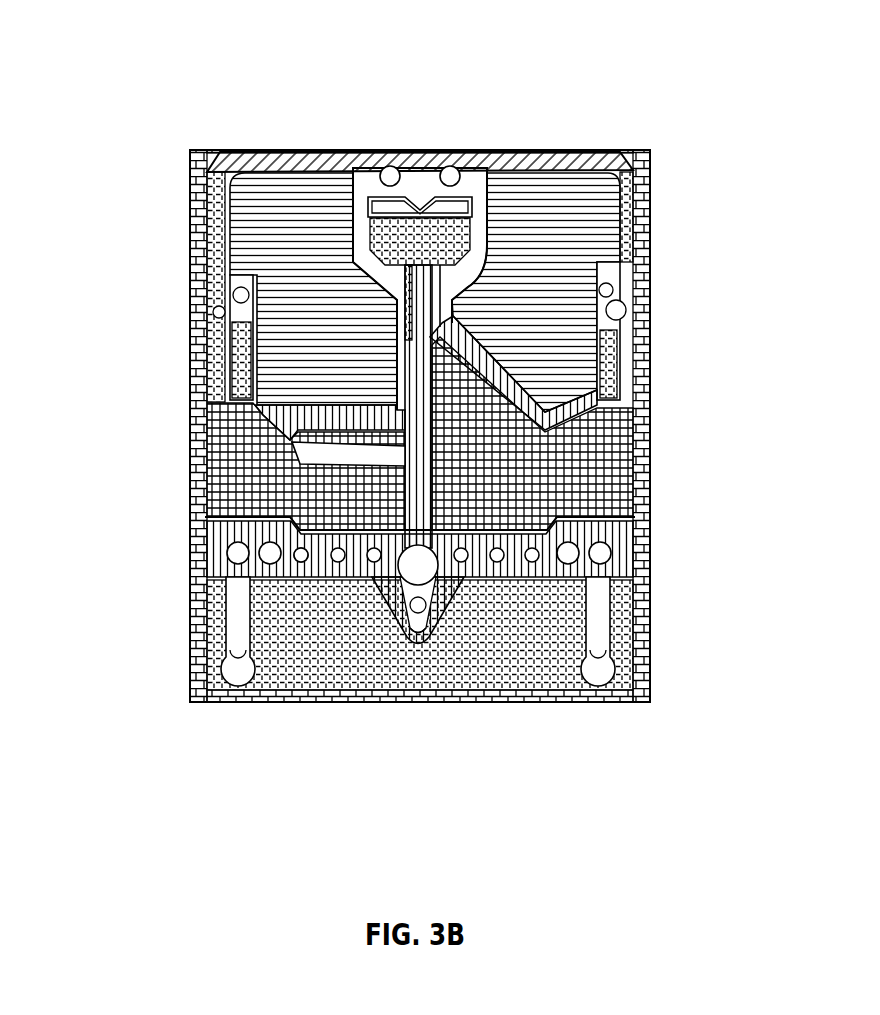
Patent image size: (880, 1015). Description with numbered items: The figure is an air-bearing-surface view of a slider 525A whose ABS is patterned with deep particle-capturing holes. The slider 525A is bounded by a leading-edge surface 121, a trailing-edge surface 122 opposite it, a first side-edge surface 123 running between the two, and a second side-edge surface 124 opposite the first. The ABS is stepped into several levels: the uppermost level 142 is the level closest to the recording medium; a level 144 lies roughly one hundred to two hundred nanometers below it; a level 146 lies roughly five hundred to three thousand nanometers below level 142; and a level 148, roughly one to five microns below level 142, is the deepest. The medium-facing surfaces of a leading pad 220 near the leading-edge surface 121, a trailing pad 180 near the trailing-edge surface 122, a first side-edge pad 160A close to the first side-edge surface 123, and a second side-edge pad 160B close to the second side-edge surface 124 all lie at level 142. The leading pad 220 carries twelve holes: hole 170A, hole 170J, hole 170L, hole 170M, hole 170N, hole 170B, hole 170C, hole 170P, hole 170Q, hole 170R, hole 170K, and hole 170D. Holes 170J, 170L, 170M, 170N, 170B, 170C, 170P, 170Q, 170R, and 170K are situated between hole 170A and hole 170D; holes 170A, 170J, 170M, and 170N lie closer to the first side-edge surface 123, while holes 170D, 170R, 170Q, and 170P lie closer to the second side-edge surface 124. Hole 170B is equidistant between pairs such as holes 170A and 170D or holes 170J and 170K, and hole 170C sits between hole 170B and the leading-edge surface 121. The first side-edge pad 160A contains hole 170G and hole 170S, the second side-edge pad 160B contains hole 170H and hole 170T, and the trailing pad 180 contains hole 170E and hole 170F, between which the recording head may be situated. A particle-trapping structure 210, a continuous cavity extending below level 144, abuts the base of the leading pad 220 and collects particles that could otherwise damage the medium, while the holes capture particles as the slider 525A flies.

The slider 525A is at (181, 99).
The leading-edge surface 121 is at (345, 702).
The trailing-edge surface 122 is at (498, 151).
The first side-edge surface 123 is at (190, 392).
The second side-edge surface 124 is at (650, 392).
The level 142 is at (232, 545).
The level 144 is at (520, 685).
The level 146 is at (566, 195).
The level 148 is at (205, 450).
The first side-edge pad 160A is at (236, 302).
The second side-edge pad 160B is at (611, 296).
The hole 170A is at (229, 556).
The hole 170B is at (417, 613).
The hole 170C is at (424, 632).
The hole 170D is at (604, 552).
The hole 170E is at (390, 166).
The hole 170F is at (450, 166).
The hole 170G is at (217, 316).
The hole 170H is at (620, 310).
The hole 170J is at (266, 558).
The hole 170K is at (574, 562).
The hole 170L is at (299, 565).
The hole 170M is at (298, 578).
The hole 170N is at (372, 563).
The hole 170P is at (463, 549).
The hole 170Q is at (499, 549).
The hole 170R is at (535, 563).
The hole 170S is at (238, 290).
The hole 170T is at (610, 286).
The trailing pad 180 is at (484, 175).
The particle-trapping structure 210 is at (236, 670).
The leading pad 220 is at (434, 580).